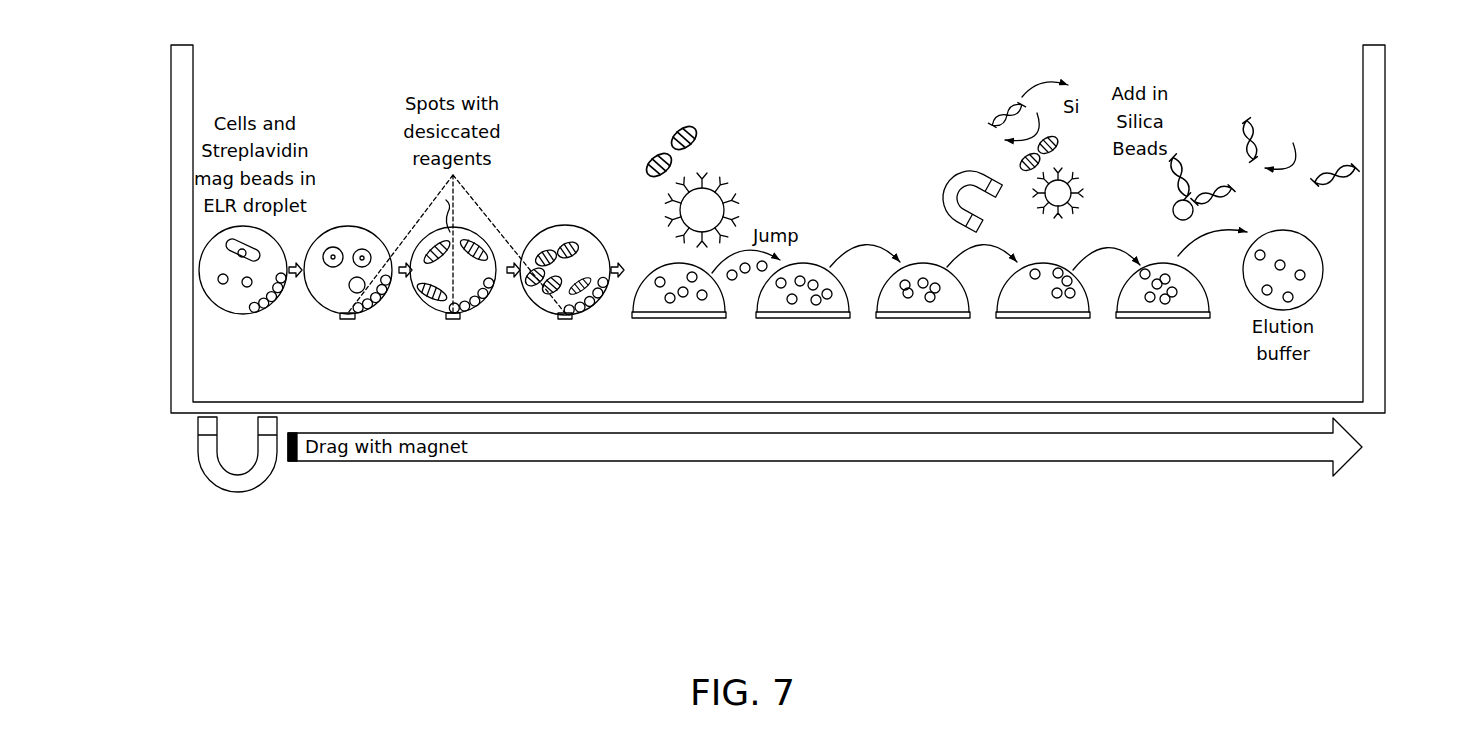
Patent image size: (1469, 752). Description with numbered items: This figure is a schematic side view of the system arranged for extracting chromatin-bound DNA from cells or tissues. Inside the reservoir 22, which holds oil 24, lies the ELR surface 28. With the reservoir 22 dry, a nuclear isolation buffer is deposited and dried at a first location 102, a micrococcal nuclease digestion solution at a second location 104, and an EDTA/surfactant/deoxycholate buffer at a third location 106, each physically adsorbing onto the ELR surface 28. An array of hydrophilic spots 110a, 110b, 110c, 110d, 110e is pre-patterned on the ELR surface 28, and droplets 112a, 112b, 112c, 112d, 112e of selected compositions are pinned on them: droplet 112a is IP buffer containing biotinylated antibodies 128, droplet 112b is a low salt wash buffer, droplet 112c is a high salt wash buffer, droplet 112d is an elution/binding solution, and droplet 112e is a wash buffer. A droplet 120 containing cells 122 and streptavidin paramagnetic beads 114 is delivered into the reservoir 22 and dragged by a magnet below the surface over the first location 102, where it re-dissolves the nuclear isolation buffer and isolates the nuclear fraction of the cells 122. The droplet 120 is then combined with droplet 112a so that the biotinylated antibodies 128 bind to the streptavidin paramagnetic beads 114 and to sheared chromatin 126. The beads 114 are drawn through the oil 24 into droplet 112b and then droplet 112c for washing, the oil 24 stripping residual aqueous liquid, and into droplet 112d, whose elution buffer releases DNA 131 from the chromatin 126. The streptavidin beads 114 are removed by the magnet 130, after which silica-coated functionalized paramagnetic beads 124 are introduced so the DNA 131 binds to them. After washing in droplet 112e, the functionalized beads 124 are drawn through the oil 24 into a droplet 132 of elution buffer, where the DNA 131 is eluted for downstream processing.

The reservoir 22 is at (576, 128).
The oil 24 is at (265, 74).
The ELR surface 28 is at (1337, 335).
The first location 102 is at (322, 318).
The second location 104 is at (465, 316).
The third location 106 is at (572, 318).
The hydrophilic spot 110a is at (728, 318).
The hydrophilic spot 110b is at (856, 320).
The hydrophilic spot 110c is at (975, 320).
The hydrophilic spot 110d is at (1073, 273).
The hydrophilic spot 110e is at (1210, 320).
The droplet 112a is at (648, 258).
The droplet 112b is at (813, 265).
The droplet 112c is at (921, 262).
The droplet 112d is at (993, 290).
The droplet 112e is at (1147, 265).
The streptavidin paramagnetic beads 114 is at (243, 314).
The droplet 120 is at (205, 252).
The cells 122 is at (218, 284).
The functionalized paramagnetic beads 124 is at (1174, 204).
The chromatin 126 is at (545, 252).
The biotinylated antibodies 128 is at (703, 165).
The magnet 130 is at (952, 158).
The DNA 131 is at (1003, 105).
The droplet 132 is at (1323, 262).